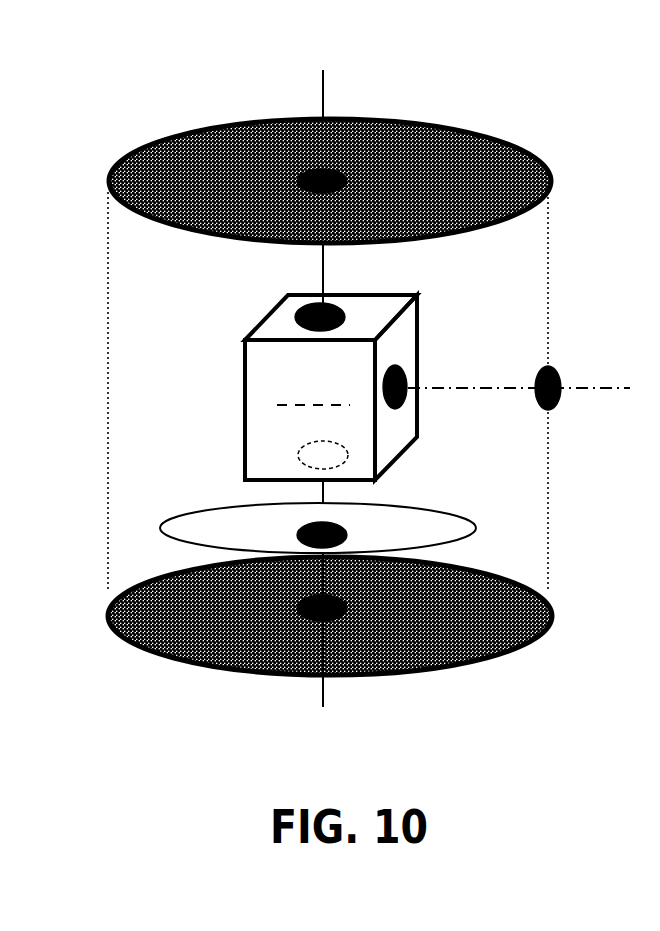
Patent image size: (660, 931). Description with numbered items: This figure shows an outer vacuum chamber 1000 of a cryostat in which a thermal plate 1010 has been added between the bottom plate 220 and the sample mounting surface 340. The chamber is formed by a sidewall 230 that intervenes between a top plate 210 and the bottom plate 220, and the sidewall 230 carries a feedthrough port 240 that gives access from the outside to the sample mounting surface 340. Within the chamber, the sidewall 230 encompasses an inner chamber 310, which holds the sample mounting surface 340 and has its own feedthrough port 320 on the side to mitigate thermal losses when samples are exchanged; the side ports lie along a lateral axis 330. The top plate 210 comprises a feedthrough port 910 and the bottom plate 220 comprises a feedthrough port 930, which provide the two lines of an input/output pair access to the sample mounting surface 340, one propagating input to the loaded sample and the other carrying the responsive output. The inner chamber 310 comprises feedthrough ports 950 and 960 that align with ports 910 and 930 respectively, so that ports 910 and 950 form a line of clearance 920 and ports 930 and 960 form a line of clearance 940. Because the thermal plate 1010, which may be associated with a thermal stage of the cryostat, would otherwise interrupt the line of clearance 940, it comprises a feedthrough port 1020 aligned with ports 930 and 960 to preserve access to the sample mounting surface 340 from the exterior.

The system 1000 is at (469, 55).
The top plate 210 is at (243, 189).
The bottom plate 220 is at (208, 617).
The sidewall 230 is at (108, 232).
The feedthrough port 240 is at (540, 405).
The inner chamber 310 is at (245, 378).
The feedthrough port 320 is at (400, 406).
The lateral axis 330 is at (622, 391).
The sample mounting surface 340 is at (277, 404).
The feedthrough port 910 is at (300, 183).
The line of clearance 920 is at (323, 76).
The feedthrough port 930 is at (300, 608).
The line of clearance 940 is at (321, 693).
The feedthrough port 950 is at (296, 315).
The feedthrough port 960 is at (298, 456).
The thermal plate 1010 is at (263, 551).
The feedthrough port 1020 is at (348, 538).